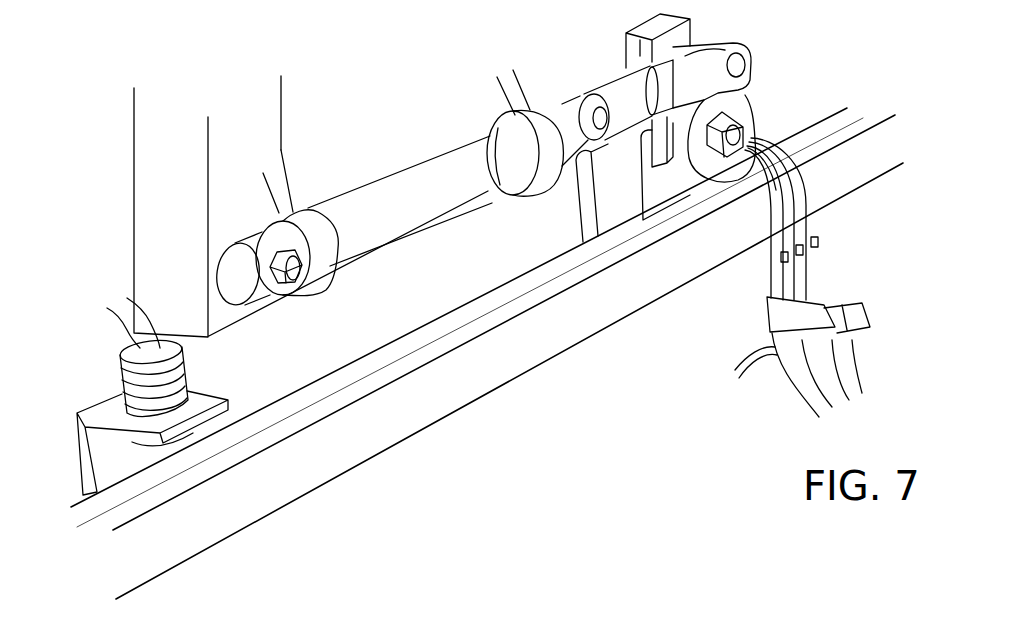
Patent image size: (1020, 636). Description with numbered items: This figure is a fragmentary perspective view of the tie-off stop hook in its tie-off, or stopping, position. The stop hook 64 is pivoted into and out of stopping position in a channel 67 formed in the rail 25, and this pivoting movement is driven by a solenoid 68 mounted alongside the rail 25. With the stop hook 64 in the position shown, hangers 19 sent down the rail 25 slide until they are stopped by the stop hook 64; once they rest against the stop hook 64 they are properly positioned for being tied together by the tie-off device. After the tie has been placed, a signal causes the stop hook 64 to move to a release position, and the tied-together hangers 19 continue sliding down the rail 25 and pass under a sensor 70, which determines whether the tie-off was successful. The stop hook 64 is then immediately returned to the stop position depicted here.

The hangers 19 is at (802, 193).
The rail 25 is at (313, 473).
The stop hook 64 is at (723, 170).
The channel 67 is at (486, 303).
The solenoid 68 is at (477, 167).
The sensor 70 is at (117, 370).